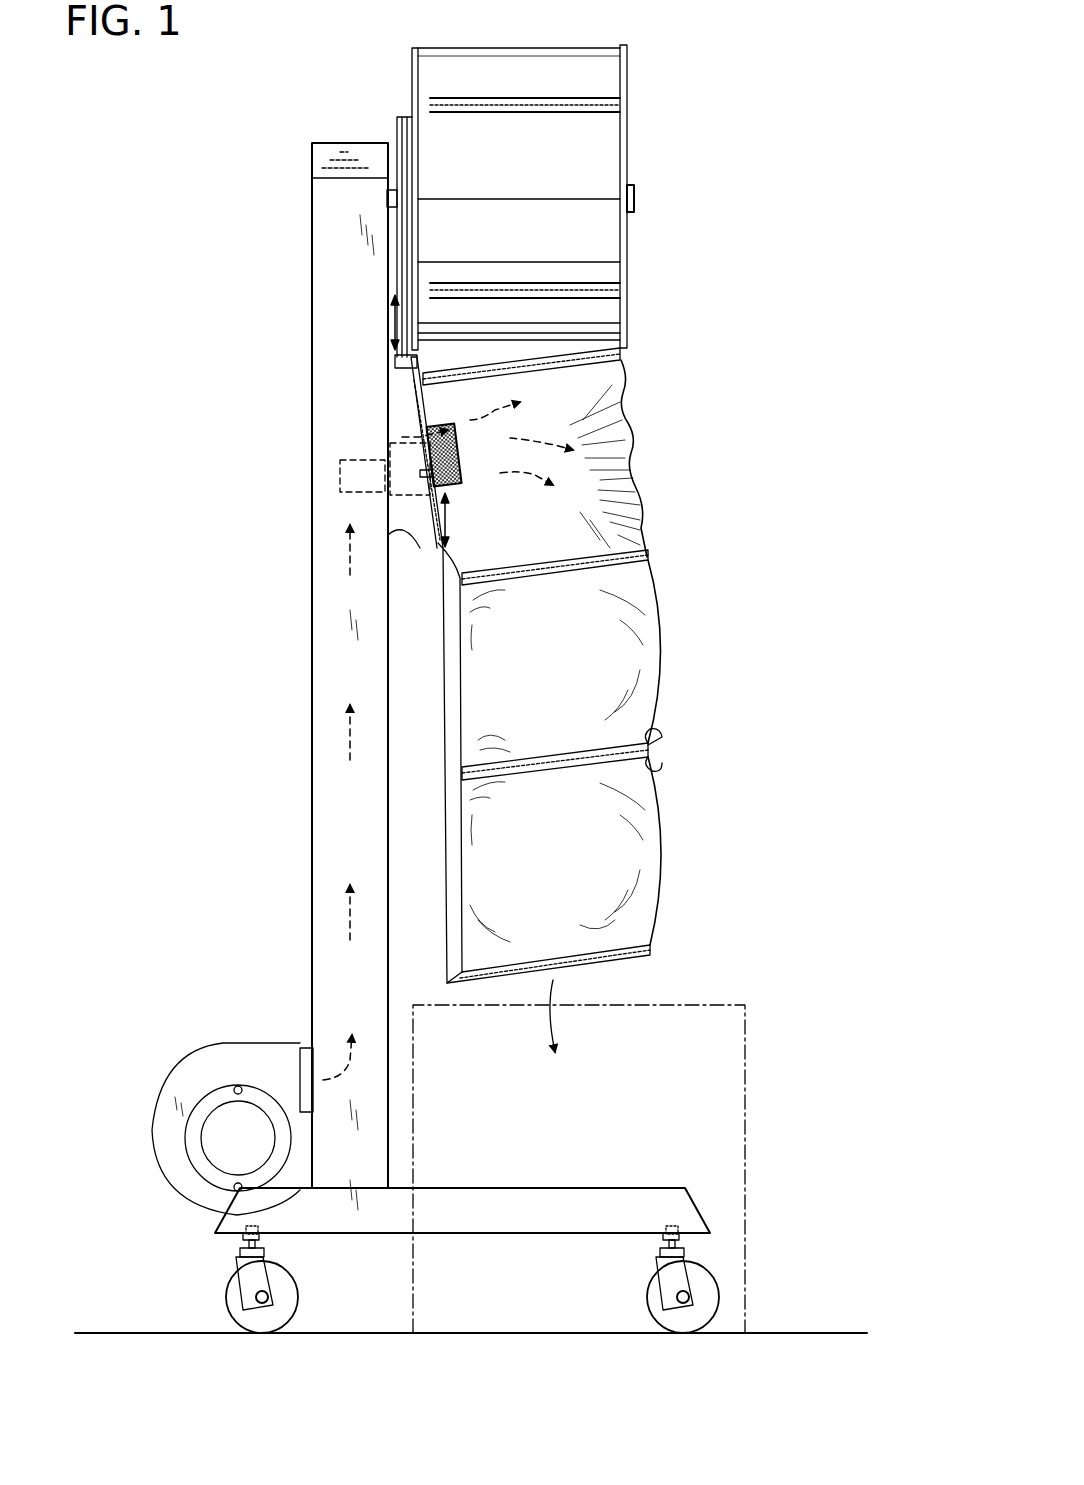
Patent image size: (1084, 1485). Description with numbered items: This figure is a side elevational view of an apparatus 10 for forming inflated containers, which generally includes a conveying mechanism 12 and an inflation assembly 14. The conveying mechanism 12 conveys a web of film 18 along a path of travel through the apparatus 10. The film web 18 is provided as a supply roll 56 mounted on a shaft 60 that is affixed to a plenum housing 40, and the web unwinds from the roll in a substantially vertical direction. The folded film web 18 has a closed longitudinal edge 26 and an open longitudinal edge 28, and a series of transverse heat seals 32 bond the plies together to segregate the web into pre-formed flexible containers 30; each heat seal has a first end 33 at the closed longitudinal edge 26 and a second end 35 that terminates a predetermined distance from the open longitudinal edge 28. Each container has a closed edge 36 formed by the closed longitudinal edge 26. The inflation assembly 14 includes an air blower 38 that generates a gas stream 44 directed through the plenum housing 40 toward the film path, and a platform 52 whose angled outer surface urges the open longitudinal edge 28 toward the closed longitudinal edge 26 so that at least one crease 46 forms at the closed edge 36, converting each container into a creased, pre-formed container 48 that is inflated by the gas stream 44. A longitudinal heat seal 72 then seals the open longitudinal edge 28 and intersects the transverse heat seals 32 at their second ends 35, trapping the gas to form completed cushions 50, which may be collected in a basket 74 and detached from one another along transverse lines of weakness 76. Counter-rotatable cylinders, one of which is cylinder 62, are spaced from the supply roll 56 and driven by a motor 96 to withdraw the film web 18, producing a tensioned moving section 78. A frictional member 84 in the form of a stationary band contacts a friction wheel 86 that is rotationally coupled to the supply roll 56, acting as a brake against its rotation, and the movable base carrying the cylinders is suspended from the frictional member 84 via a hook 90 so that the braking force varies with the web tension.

The apparatus 10 is at (728, 110).
The conveying mechanism 12 is at (642, 326).
The inflation assembly 14 is at (330, 432).
The web of film 18 is at (580, 172).
The closed longitudinal edge 26 is at (675, 630).
The open longitudinal edge 28 is at (416, 372).
The pre-formed flexible container 30 is at (540, 352).
The transverse heat seal 32 is at (597, 100).
The first end 33 is at (662, 765).
The second end 35 is at (462, 768).
The closed edge 36 is at (631, 408).
The air blower 38 is at (195, 1072).
The plenum housing 40 is at (330, 803).
The gas stream 44 is at (325, 897).
The crease 46 is at (645, 468).
The creased, pre-formed container 48 is at (552, 539).
The completed cushion 50 is at (570, 756).
The platform 52 is at (425, 560).
The supply roll 56 is at (525, 40).
The shaft 60 is at (634, 200).
The cylinder 62 is at (468, 455).
The longitudinal heat seal 72 is at (450, 520).
The basket 74 is at (745, 1095).
The transverse line of weakness 76 is at (642, 548).
The moving section 78 is at (458, 395).
The frictional member 84 is at (403, 292).
The friction wheel 86 is at (398, 118).
The hook 90 is at (397, 358).
The motor 96 is at (340, 475).